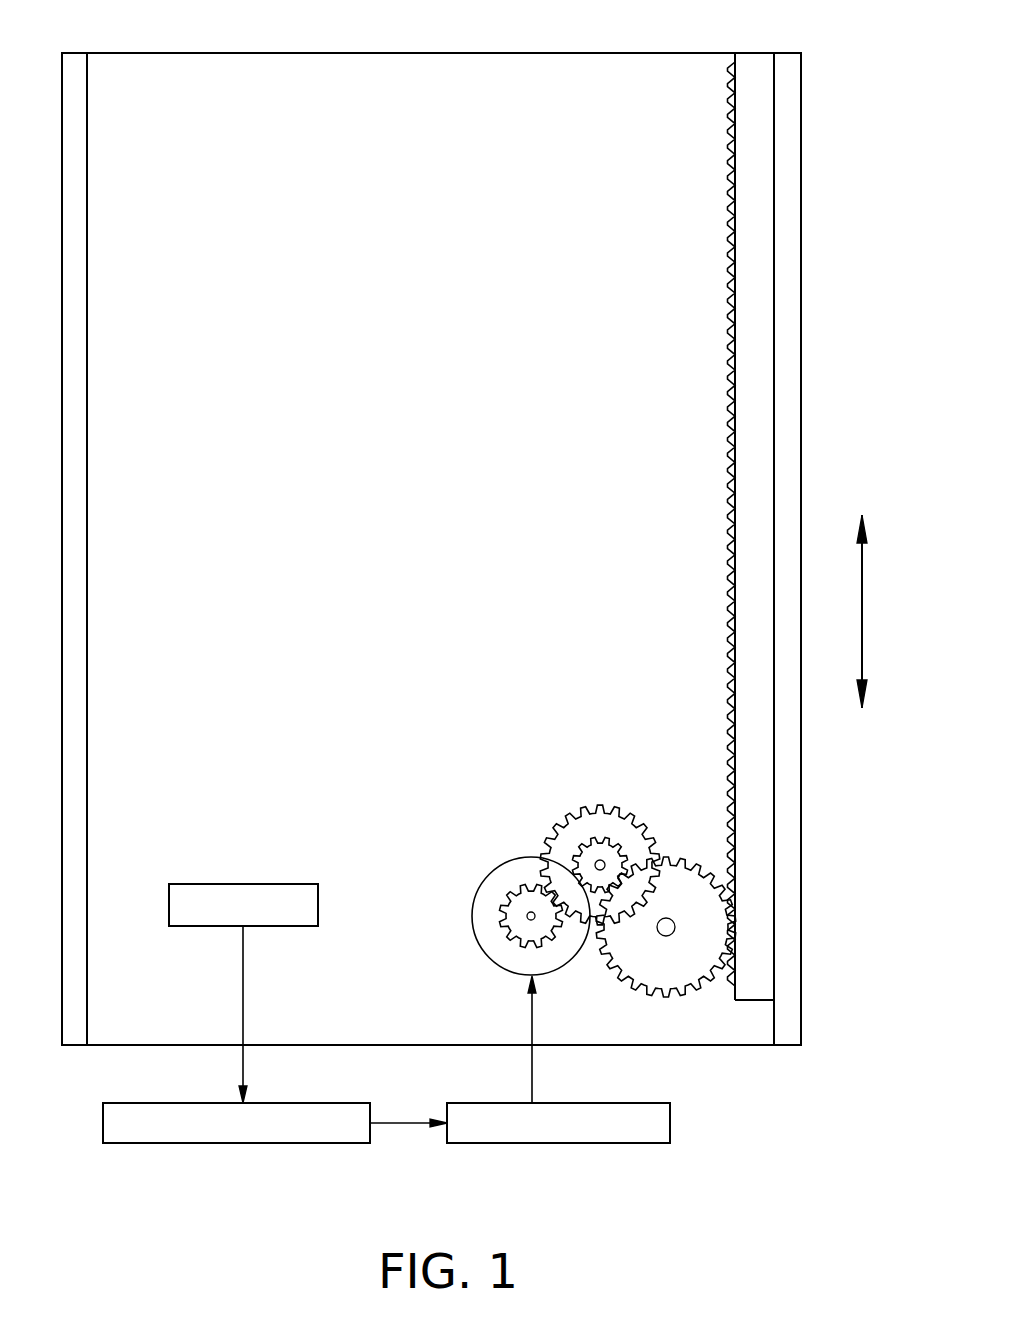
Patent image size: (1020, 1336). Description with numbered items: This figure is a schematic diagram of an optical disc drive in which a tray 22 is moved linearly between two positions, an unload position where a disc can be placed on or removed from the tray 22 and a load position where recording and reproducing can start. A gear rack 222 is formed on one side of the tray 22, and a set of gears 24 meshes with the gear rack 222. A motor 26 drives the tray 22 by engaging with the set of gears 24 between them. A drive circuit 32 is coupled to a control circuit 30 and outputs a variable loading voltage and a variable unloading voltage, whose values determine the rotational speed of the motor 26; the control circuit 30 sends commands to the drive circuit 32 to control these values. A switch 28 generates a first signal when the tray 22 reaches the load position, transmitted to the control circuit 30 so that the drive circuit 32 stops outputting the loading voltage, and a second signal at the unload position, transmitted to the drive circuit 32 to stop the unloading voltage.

The tray 22 is at (783, 323).
The gear rack 222 is at (730, 378).
The set of gears 24 is at (542, 923).
The motor 26 is at (510, 956).
The switch 28 is at (253, 890).
The control circuit 30 is at (243, 1143).
The drive circuit 32 is at (546, 1143).